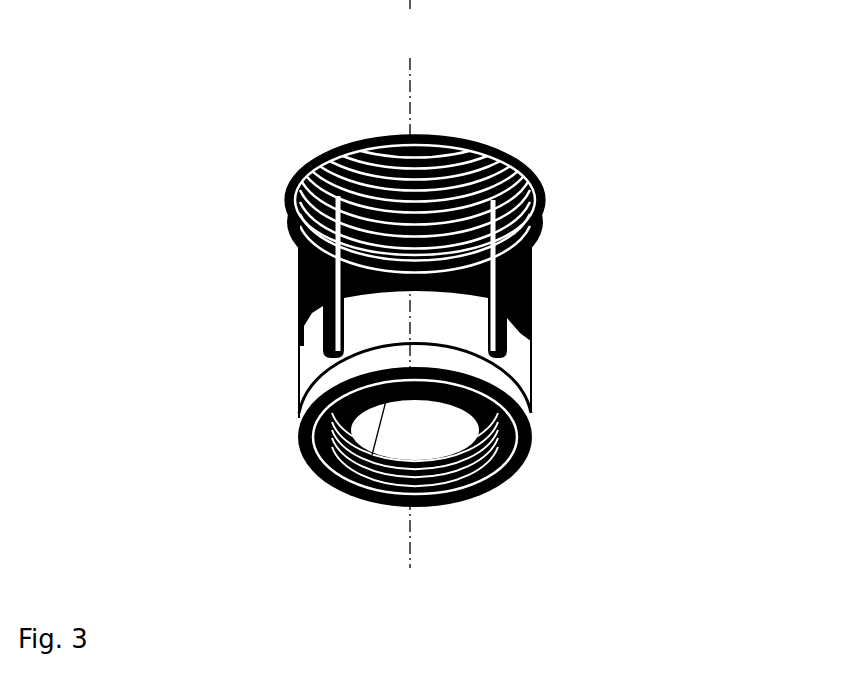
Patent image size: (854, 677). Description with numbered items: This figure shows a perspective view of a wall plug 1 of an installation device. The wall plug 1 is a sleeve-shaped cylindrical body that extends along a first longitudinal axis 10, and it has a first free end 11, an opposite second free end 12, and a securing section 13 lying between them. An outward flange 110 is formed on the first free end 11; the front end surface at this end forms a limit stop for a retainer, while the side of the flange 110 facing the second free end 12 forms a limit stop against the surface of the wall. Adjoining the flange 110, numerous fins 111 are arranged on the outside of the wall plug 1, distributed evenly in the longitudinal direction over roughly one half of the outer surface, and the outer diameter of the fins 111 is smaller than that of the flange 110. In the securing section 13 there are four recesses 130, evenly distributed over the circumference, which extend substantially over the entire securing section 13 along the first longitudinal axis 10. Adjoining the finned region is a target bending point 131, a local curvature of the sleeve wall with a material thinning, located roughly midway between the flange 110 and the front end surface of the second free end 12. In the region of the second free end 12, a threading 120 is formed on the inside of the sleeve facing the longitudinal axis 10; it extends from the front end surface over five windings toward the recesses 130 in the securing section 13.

The wall plug 1 is at (198, 79).
The first longitudinal axis 10 is at (410, 72).
The first free end 11 is at (580, 198).
The second free end 12 is at (580, 412).
The securing section 13 is at (580, 298).
The flange 110 is at (307, 172).
The fins 111 is at (297, 262).
The threading 120 is at (435, 508).
The recesses 130 is at (332, 332).
The target bending point 131 is at (388, 393).